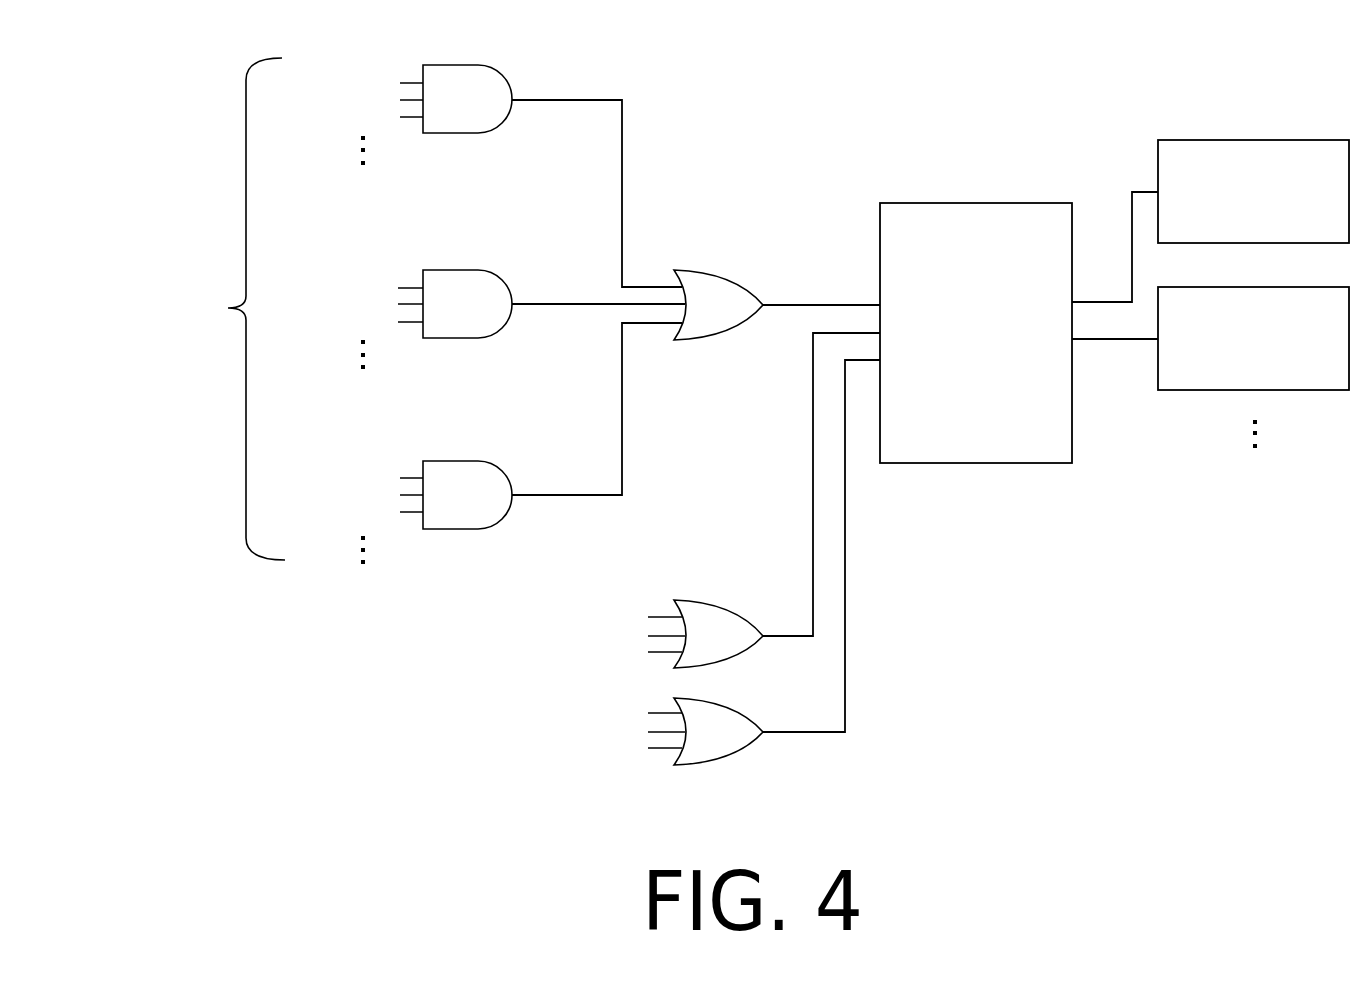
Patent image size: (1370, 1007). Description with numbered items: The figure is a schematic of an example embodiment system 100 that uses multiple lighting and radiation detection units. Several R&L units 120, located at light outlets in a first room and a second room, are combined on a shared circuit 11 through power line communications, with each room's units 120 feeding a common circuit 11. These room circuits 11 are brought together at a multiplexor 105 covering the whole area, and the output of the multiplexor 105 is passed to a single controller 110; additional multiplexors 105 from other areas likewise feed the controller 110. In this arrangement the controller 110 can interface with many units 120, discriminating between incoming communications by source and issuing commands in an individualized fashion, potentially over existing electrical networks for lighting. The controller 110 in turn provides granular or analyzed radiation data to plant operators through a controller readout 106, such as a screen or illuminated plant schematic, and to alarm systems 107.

The system 100 is at (343, 717).
The R&L unit 120 is at (425, 297).
The circuit 11 is at (583, 99).
The multiplexor 105 is at (731, 279).
The controller 110 is at (1013, 464).
The controller readout 106 is at (1188, 140).
The alarm system 107 is at (1185, 391).